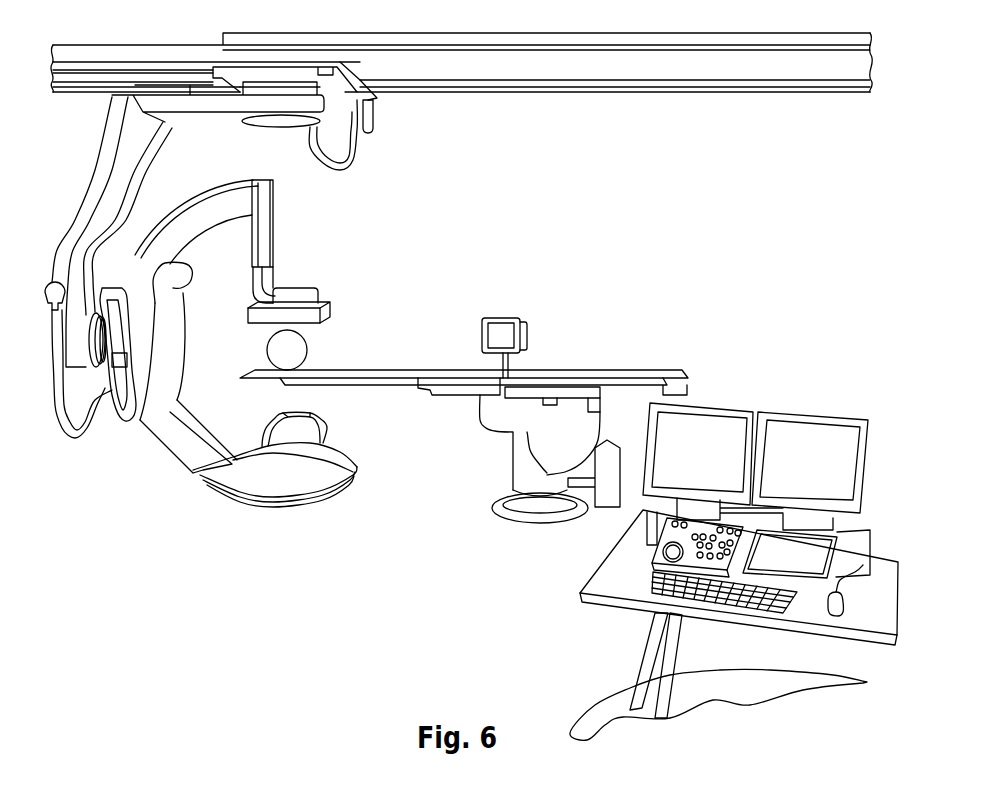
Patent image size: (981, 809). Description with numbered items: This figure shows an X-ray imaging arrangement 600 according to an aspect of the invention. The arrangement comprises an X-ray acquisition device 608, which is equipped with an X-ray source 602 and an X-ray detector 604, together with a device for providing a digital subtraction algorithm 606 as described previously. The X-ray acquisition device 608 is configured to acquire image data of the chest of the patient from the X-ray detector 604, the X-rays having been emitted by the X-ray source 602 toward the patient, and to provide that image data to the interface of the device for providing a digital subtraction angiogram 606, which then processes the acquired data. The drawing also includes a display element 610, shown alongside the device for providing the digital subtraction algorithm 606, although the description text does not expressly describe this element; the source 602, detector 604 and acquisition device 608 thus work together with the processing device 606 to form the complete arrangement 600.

The X-ray imaging arrangement 600 is at (175, 482).
The X-ray source 602 is at (330, 494).
The X-ray detector 604 is at (340, 304).
The device for providing a digital subtraction algorithm 606 is at (876, 510).
The X-ray acquisition device 608 is at (143, 378).
The display monitors 610 is at (767, 390).